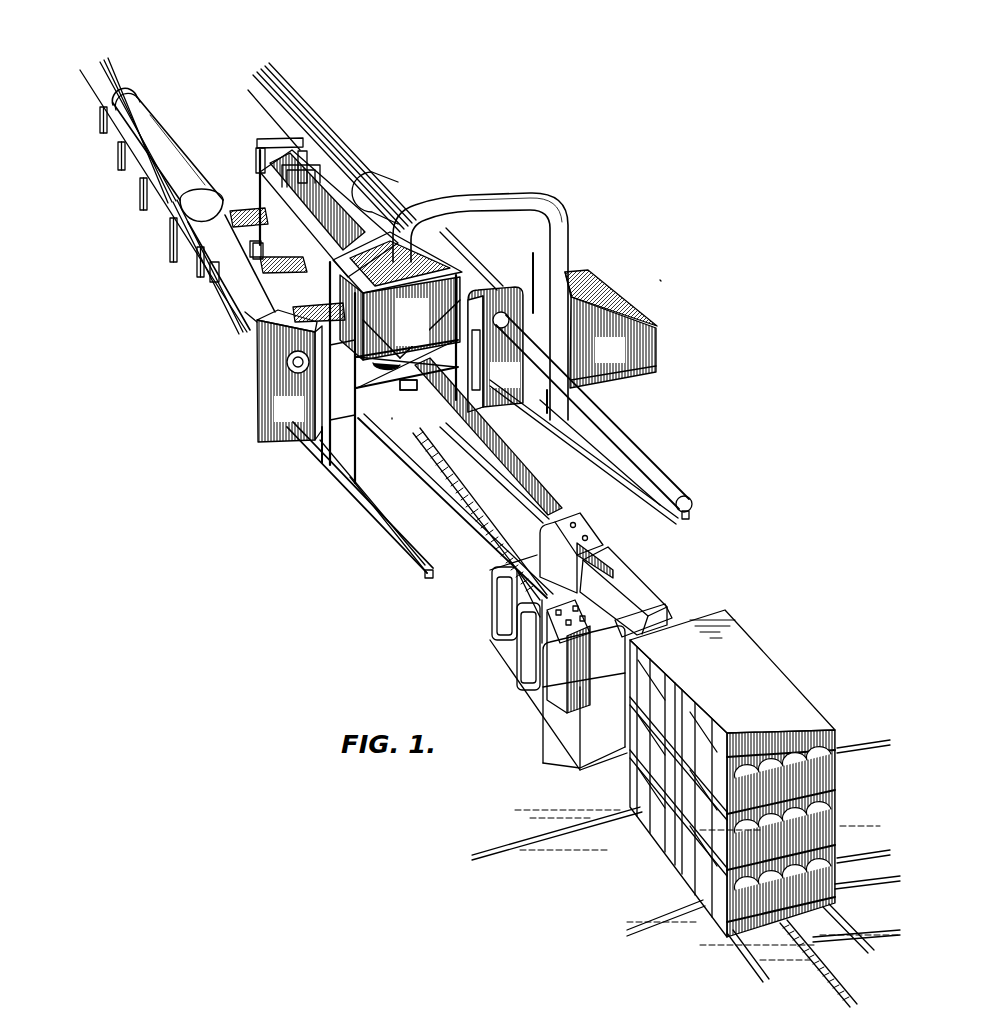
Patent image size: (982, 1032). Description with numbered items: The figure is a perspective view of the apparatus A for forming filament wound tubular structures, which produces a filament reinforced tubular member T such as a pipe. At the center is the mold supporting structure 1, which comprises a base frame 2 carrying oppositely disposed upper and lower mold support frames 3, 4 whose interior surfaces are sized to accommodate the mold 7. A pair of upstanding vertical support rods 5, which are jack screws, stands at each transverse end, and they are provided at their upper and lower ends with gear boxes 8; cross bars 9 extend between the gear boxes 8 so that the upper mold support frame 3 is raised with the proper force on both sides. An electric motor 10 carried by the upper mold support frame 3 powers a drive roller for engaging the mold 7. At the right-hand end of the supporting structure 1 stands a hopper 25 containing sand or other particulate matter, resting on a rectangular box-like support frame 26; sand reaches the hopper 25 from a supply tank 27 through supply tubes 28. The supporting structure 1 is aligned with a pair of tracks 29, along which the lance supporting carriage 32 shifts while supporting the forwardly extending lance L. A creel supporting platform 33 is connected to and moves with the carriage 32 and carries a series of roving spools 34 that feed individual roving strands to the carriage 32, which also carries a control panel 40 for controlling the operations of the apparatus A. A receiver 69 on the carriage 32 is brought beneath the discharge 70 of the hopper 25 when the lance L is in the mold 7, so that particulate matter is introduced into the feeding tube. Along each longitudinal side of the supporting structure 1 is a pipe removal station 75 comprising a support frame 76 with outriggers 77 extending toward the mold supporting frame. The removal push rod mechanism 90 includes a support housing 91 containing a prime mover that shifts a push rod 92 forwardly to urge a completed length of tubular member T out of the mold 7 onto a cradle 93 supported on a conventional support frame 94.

The mold supporting structure 1 is at (392, 425).
The base frame 2 is at (160, 222).
The upper mold support frame 3 is at (275, 200).
The lower mold support frame 4 is at (260, 203).
The support rods 5 is at (258, 158).
The mold 7 is at (258, 322).
The gear boxes 8 is at (253, 248).
The cross bars 9 is at (297, 292).
The electric motor 10 is at (310, 157).
The hopper 25 is at (427, 322).
The support frame 26 is at (365, 417).
The supply tank 27 is at (623, 360).
The supply tubes 28 is at (530, 197).
The tracks 29 is at (470, 573).
The lance supporting carriage 32 is at (630, 600).
The creel supporting platform 33 is at (720, 694).
The roving spools 34 is at (817, 763).
The control panel 40 is at (557, 682).
The receiver 69 is at (603, 537).
The discharge 70 is at (430, 357).
The pipe removal stations 75 is at (247, 360).
The support frame 76 is at (302, 420).
The outriggers 77 is at (232, 314).
The removal push rod mechanism 90 is at (665, 452).
The support housing 91 is at (632, 483).
The push rod 92 is at (297, 370).
The cradle 93 is at (103, 90).
The support frame 94 is at (118, 158).
The tubular member T is at (165, 112).
The apparatus A is at (660, 280).
The lance L is at (525, 470).